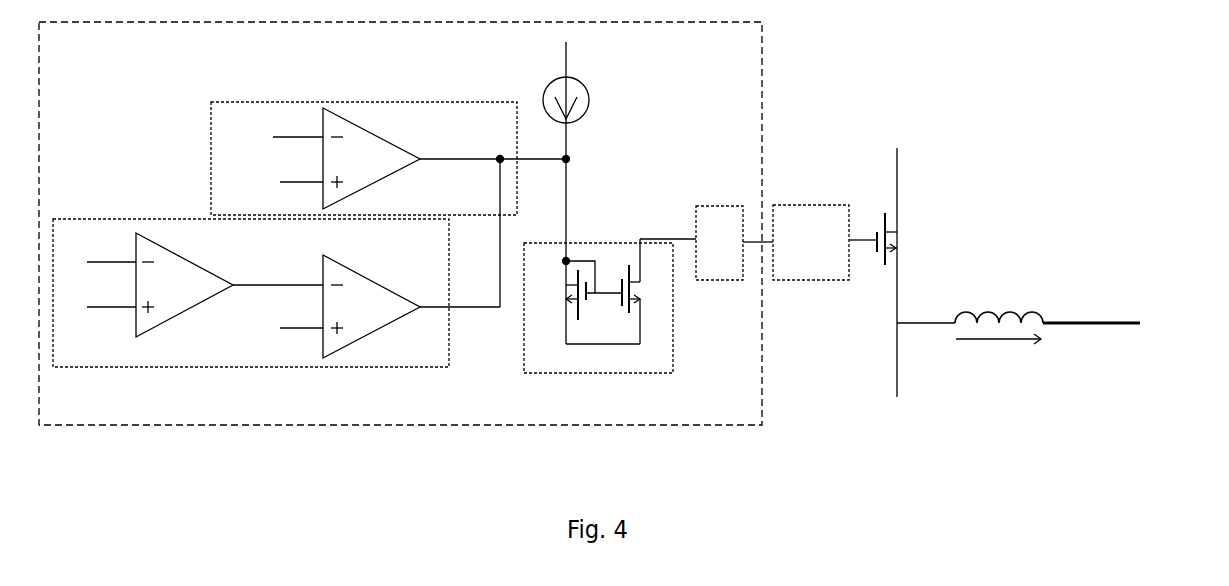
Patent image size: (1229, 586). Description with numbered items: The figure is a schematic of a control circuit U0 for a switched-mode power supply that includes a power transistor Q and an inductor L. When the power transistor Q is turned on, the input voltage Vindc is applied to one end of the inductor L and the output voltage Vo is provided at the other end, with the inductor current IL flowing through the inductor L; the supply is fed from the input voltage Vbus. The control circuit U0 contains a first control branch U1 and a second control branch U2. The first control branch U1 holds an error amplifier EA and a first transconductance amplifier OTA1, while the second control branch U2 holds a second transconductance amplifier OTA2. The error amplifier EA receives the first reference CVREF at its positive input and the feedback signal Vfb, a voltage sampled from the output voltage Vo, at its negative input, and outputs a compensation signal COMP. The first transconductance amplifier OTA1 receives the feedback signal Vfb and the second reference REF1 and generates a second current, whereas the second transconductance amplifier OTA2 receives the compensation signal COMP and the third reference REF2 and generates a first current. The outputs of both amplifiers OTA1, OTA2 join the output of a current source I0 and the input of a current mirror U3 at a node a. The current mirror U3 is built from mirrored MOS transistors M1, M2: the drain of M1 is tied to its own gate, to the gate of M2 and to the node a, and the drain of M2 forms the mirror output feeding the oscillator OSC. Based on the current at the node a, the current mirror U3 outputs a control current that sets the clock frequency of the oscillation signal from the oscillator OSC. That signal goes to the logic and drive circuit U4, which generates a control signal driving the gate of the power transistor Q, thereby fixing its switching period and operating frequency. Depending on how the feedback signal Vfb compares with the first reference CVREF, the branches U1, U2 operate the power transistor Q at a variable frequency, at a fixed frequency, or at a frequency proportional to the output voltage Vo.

The control circuit U0 is at (400, 223).
The first control branch U1 is at (251, 293).
The second control branch U2 is at (364, 158).
The current mirror U3 is at (598, 308).
The logic and drive circuit U4 is at (825, 242).
The first transconductance amplifier OTA1 is at (371, 158).
The second transconductance amplifier OTA2 is at (411, 306).
The error amplifier EA is at (184, 285).
The MOS transistor M1 is at (589, 301).
The MOS transistor M2 is at (643, 291).
The current source I0 is at (574, 151).
The node a is at (502, 230).
The oscillator OSC is at (734, 243).
The power transistor Q is at (894, 239).
The inductor L is at (999, 298).
The inductor current IL is at (998, 355).
The input voltage Vbus is at (859, 223).
The input voltage Vindc is at (884, 360).
The output voltage Vo is at (1110, 323).
The feedback signal Vfb is at (205, 196).
The second reference REF1 is at (283, 182).
The third reference REF2 is at (281, 328).
The first reference CVREF is at (103, 295).
The compensation signal COMP is at (278, 277).